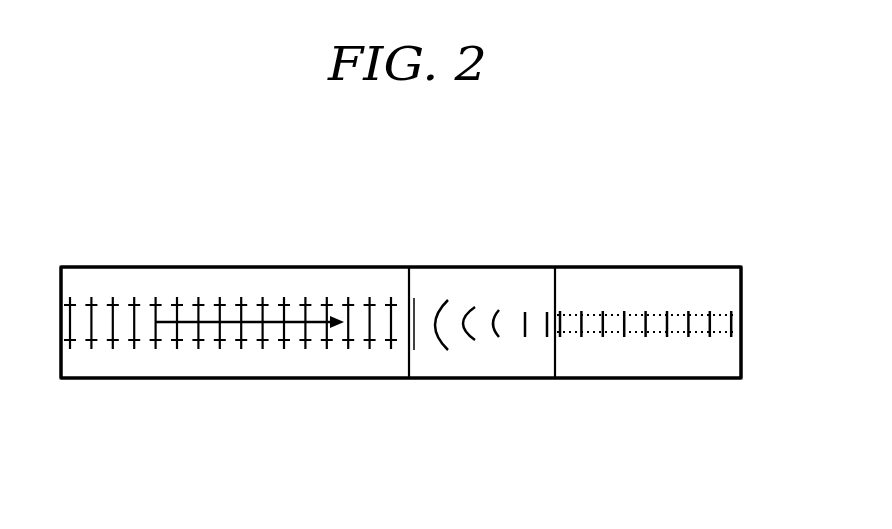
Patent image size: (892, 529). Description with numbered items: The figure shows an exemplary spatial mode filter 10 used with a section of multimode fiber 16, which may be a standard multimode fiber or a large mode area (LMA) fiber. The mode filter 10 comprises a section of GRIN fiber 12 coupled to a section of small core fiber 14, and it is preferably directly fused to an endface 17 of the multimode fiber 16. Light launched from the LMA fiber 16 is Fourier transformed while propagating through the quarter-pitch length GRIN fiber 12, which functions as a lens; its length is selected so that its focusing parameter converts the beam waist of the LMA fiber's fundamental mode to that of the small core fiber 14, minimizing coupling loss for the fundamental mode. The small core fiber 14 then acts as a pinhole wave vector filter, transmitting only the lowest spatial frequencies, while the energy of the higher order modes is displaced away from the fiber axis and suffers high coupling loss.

The spatial mode filter 10 is at (745, 195).
The GRIN fiber 12 is at (523, 275).
The small core fiber 14 is at (708, 275).
The multimode fiber 16 is at (135, 282).
The endface 17 is at (405, 286).